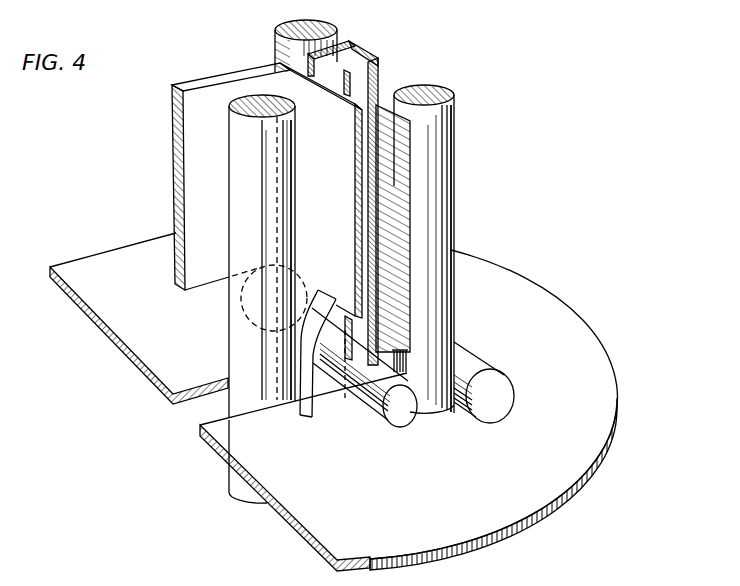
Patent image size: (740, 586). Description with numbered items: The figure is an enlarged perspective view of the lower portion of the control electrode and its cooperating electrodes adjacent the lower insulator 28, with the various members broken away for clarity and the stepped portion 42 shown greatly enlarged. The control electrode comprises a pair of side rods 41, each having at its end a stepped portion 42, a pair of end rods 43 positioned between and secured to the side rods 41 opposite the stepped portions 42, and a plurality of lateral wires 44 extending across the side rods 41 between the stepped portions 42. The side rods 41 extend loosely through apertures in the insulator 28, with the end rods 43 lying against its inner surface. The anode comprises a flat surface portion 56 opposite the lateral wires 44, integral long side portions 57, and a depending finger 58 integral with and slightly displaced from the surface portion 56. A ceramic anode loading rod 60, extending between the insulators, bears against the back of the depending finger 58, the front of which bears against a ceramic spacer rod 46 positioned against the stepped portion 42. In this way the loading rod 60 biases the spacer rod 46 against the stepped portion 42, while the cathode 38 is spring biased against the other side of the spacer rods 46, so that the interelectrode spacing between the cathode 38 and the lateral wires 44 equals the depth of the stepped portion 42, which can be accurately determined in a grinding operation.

The lower insulator 28 is at (592, 430).
The cathode 38 is at (362, 57).
The side rods 41 is at (320, 28).
The stepped portion 42 is at (408, 362).
The end rods 43 is at (500, 381).
The lateral wires 44 is at (399, 188).
The spacer rods 46 is at (395, 416).
The flat surface portion 56 is at (321, 231).
The long side portions 57 is at (188, 150).
The depending finger 58 is at (305, 417).
The anode loading rod 60 is at (233, 333).